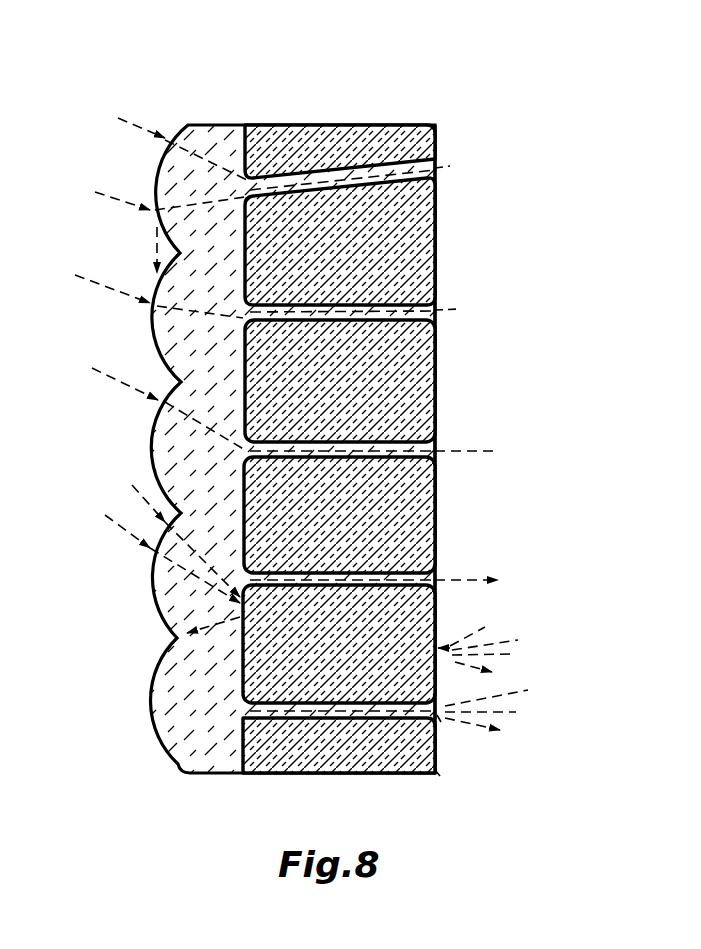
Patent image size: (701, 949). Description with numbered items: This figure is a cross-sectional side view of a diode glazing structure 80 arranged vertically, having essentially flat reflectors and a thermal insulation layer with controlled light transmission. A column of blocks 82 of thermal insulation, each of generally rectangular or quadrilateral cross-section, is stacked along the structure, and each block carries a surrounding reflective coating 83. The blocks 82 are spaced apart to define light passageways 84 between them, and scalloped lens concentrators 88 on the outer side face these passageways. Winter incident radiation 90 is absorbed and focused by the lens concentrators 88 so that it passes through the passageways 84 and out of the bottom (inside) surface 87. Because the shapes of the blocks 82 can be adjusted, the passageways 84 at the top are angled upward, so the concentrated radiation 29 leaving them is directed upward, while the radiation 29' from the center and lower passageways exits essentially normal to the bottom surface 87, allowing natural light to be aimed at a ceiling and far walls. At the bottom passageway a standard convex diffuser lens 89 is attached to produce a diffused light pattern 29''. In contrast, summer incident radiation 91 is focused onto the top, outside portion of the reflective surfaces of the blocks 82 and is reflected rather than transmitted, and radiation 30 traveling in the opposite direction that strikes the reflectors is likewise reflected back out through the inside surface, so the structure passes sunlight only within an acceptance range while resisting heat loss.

The diode glazing structure 80 is at (408, 72).
The blocks of thermal insulation 82 is at (358, 276).
The reflective coating 83 is at (438, 225).
The light passageways 84 is at (245, 186).
The lens concentrators 88 is at (212, 484).
The incident radiation (winter) 90 is at (126, 118).
The summer incident radiation 91 is at (113, 512).
The concentrated radiation 29 is at (483, 204).
The radiation (normal exit) 29' is at (487, 485).
The diffused light pattern 29'' is at (523, 704).
The radiation in the opposite direction 30 is at (499, 649).
The convex diffuser lens 89 is at (440, 718).
The bottom (inside) surface 87 is at (436, 770).